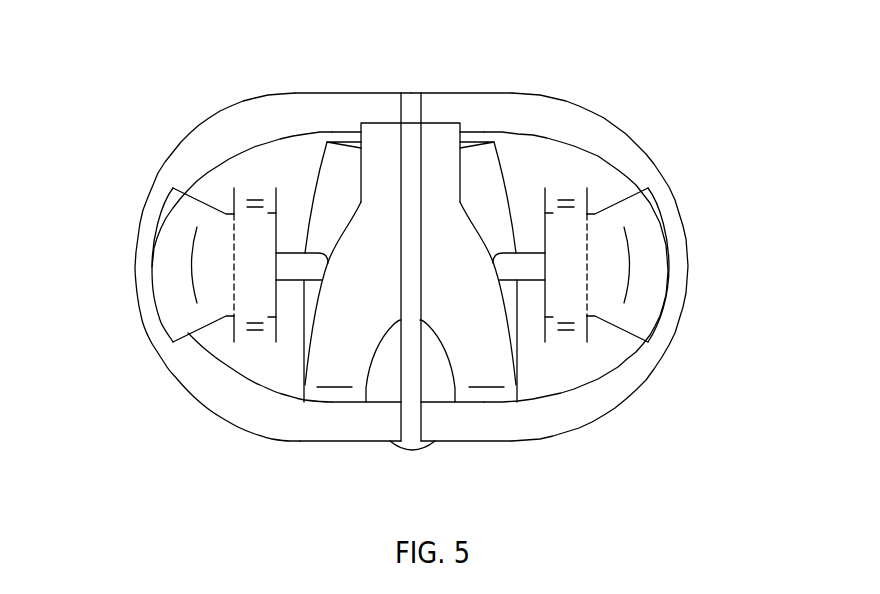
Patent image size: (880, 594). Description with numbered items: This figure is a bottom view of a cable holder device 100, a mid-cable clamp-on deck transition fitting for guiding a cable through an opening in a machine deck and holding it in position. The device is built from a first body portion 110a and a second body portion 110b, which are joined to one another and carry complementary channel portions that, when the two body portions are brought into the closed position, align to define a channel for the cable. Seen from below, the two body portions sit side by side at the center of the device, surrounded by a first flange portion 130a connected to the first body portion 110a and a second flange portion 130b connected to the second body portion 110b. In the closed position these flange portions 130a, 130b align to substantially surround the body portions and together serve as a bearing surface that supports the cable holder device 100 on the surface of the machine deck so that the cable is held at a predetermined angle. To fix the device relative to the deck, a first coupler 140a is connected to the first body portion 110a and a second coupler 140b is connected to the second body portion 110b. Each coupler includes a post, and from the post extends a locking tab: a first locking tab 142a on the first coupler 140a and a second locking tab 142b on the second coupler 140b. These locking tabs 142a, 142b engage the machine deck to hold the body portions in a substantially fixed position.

The cable holder device 100 is at (417, 307).
The first body portion 110a is at (491, 393).
The second body portion 110b is at (330, 393).
The first flange portion 130a is at (601, 241).
The second flange portion 130b is at (220, 232).
The first coupler 140a is at (689, 285).
The second coupler 140b is at (133, 283).
The first locking tab 142a is at (655, 256).
The second locking tab 142b is at (165, 238).